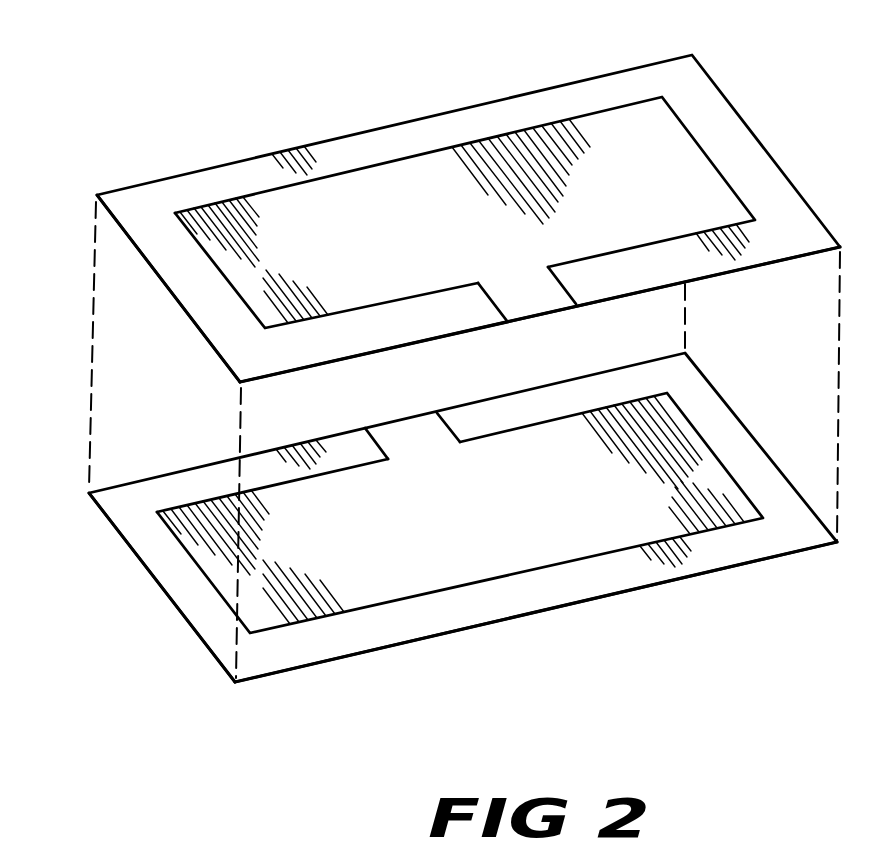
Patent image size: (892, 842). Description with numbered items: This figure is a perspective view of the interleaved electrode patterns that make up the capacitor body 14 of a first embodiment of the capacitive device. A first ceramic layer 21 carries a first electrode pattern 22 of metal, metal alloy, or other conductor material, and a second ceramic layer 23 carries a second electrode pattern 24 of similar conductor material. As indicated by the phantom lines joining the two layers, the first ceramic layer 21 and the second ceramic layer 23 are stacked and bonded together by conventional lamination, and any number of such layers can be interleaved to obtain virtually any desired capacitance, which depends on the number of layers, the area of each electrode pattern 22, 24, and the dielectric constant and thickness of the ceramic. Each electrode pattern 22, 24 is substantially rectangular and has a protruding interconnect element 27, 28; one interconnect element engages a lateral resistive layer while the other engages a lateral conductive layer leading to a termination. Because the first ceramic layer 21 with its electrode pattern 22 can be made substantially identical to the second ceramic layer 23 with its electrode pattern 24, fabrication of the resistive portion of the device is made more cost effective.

The capacitor body 14 is at (225, 132).
The first ceramic layer 21 is at (700, 110).
The first electrode pattern 22 is at (447, 177).
The protruding interconnect element 27 is at (526, 303).
The second ceramic layer 23 is at (705, 548).
The second electrode pattern 24 is at (210, 550).
The protruding interconnect element 28 is at (395, 437).